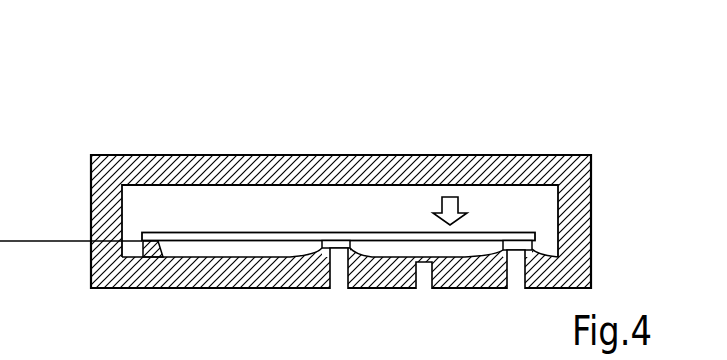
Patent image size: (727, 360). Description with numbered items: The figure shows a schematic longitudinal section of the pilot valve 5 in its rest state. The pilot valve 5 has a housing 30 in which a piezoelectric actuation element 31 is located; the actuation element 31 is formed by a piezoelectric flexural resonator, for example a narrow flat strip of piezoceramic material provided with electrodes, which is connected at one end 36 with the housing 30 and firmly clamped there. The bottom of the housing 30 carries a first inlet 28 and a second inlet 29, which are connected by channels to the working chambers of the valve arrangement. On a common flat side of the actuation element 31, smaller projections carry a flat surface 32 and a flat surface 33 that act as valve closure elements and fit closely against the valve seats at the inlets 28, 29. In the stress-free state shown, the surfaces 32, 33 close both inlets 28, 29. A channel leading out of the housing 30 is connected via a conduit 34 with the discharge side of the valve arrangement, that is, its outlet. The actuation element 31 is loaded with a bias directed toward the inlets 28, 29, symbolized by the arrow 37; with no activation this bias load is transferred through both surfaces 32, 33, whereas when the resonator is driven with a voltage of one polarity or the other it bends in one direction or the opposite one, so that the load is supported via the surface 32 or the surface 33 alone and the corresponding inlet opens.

The pilot valve 5 is at (432, 115).
The first inlet 28 is at (340, 290).
The second inlet 29 is at (517, 290).
The housing 30 is at (502, 157).
The piezoelectric actuation element 31 is at (369, 232).
The flat surface 32 is at (278, 272).
The flat surface 33 is at (543, 248).
The conduit 34 is at (422, 290).
The end of the actuation element 36 is at (157, 240).
The arrow 37 is at (460, 203).